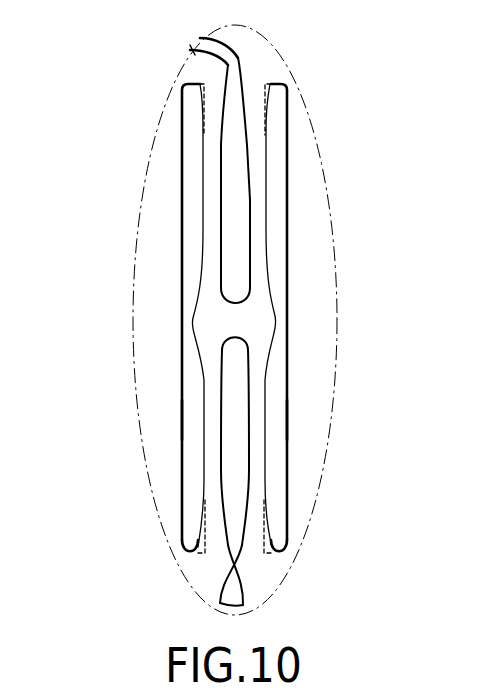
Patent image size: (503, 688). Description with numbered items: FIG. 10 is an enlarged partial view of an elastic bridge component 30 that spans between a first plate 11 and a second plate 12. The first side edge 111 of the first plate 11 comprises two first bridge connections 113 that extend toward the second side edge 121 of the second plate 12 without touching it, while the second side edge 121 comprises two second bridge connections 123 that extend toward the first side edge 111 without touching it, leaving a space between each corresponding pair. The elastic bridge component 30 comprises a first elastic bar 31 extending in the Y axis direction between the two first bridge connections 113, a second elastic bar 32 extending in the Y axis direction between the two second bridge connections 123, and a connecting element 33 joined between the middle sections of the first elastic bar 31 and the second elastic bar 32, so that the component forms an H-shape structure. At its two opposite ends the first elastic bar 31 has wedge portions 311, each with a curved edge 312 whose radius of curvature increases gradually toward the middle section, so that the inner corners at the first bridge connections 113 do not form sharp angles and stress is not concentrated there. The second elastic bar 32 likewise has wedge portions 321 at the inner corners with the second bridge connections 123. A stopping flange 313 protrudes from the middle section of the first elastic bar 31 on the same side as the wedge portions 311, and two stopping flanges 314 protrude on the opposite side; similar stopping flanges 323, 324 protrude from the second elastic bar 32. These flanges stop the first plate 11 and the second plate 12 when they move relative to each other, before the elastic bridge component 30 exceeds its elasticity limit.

The first plate 11 is at (343, 327).
The first side edge 111 is at (284, 432).
The first bridge connection 113 is at (255, 72).
The second plate 12 is at (125, 344).
The second side edge 121 is at (185, 432).
The second bridge connection 123 is at (208, 72).
The elastic bridge component 30 is at (237, 326).
The first elastic bar 31 is at (335, 324).
The wedge portion 311 is at (271, 87).
The curved edge 312 is at (267, 110).
The stopping flange 313 is at (274, 312).
The stopping flange 314 is at (240, 55).
The second elastic bar 32 is at (150, 301).
The wedge portion 321 is at (197, 86).
The stopping flange 323 is at (193, 325).
The stopping flange 324 is at (200, 38).
The connecting element 33 is at (233, 313).